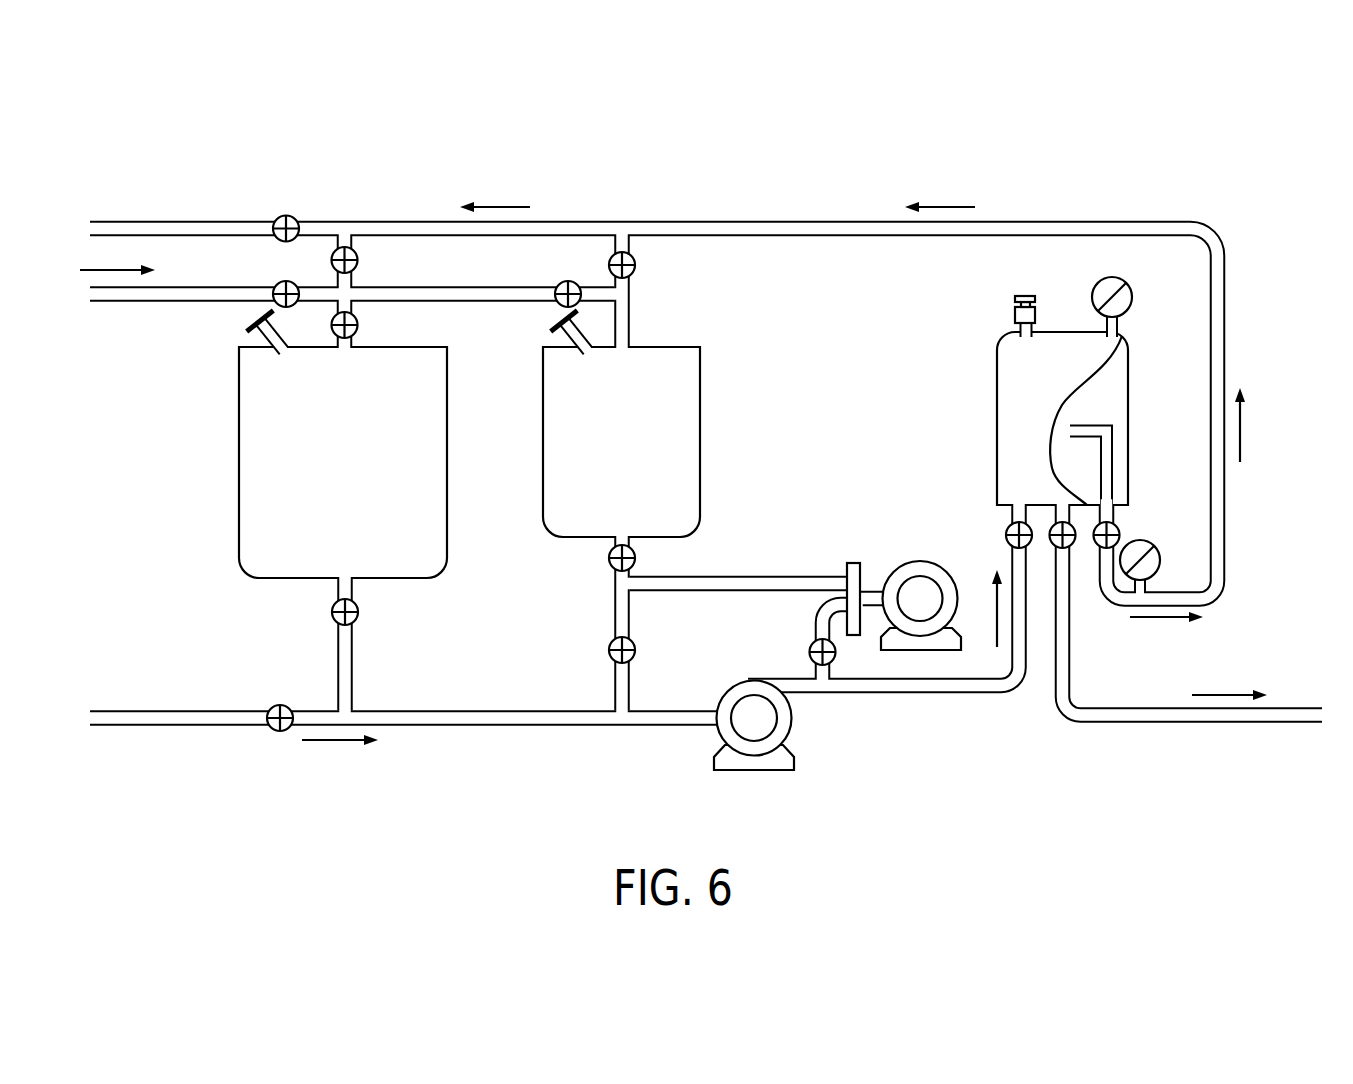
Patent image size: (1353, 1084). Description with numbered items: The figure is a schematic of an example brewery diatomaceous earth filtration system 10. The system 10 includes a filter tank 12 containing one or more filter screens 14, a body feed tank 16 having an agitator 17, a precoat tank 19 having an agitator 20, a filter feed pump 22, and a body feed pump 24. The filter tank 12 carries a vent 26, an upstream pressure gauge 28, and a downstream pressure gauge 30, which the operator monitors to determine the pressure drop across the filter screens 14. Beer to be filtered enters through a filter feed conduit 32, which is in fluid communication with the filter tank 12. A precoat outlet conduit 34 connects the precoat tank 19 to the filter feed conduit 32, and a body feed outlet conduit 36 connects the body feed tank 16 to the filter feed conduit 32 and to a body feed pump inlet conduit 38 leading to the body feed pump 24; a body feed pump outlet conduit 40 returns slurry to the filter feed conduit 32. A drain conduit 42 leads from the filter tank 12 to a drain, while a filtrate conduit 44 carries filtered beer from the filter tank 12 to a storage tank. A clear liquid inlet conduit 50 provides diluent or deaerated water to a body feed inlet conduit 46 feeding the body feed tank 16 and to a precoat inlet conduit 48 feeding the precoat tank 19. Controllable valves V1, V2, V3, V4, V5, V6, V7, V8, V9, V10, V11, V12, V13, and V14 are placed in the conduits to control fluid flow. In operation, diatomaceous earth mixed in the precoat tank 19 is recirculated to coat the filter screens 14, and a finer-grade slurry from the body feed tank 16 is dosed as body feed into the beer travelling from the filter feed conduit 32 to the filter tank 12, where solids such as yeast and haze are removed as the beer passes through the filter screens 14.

The brewery diatomaceous earth filtration system 10 is at (152, 838).
The filter tank 12 is at (996, 432).
The filter screen 14 is at (1094, 424).
The body feed tank 16 is at (703, 432).
The agitator 17 is at (566, 338).
The precoat tank 19 is at (236, 458).
The agitator 20 is at (256, 338).
The filter feed pump 22 is at (755, 771).
The body feed pump 24 is at (912, 564).
The vent 26 is at (1019, 295).
The upstream pressure gauge 28 is at (1122, 305).
The downstream pressure gauge 30 is at (1152, 562).
The filter feed conduit 32 is at (112, 727).
The precoat outlet conduit 34 is at (355, 655).
The body feed outlet conduit 36 is at (612, 612).
The body feed pump inlet conduit 38 is at (757, 577).
The body feed pump outlet conduit 40 is at (822, 603).
The drain conduit 42 is at (1222, 723).
The filtrate conduit 44 is at (1102, 222).
The body feed inlet conduit 46 is at (632, 310).
The precoat inlet conduit 48 is at (356, 338).
The clear liquid inlet conduit 50 is at (112, 304).
The controllable valve V1 is at (276, 727).
The controllable valve V2 is at (333, 617).
The controllable valve V3 is at (611, 562).
The controllable valve V4 is at (631, 645).
The controllable valve V5 is at (809, 652).
The controllable valve V6 is at (1007, 528).
The controllable valve V7 is at (1069, 545).
The controllable valve V8 is at (1116, 529).
The controllable valve V9 is at (635, 262).
The controllable valve V10 is at (562, 286).
The controllable valve V11 is at (352, 318).
The controllable valve V12 is at (350, 250).
The controllable valve V13 is at (281, 218).
The controllable valve V14 is at (283, 284).